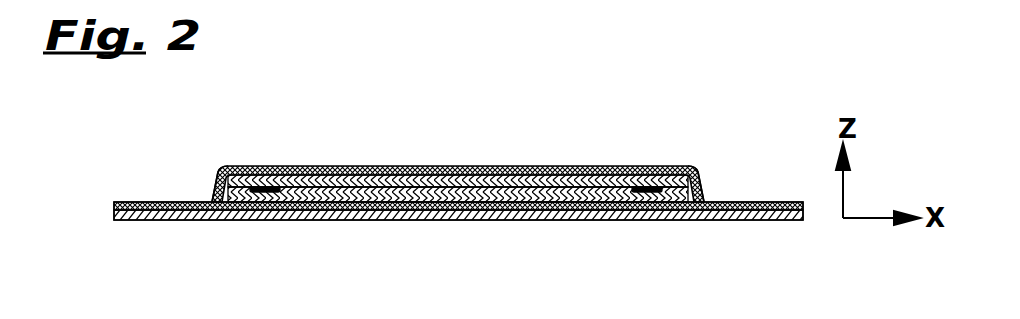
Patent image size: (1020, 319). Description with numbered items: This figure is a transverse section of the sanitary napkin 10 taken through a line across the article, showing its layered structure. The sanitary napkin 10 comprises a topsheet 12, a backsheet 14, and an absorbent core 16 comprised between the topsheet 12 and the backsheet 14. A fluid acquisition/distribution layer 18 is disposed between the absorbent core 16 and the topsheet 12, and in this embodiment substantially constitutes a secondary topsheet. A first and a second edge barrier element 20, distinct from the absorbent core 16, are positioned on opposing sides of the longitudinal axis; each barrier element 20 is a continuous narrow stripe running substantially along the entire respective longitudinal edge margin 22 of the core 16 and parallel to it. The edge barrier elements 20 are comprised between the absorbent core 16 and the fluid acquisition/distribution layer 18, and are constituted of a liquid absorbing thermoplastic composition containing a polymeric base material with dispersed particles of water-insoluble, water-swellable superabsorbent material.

The sanitary napkin 10 is at (772, 143).
The topsheet 12 is at (518, 170).
The backsheet 14 is at (565, 213).
The absorbent core 16 is at (420, 203).
The fluid acquisition/distribution layer 18 is at (412, 179).
The edge barrier element 20 is at (268, 194).
The longitudinal edge margin 22 is at (215, 179).